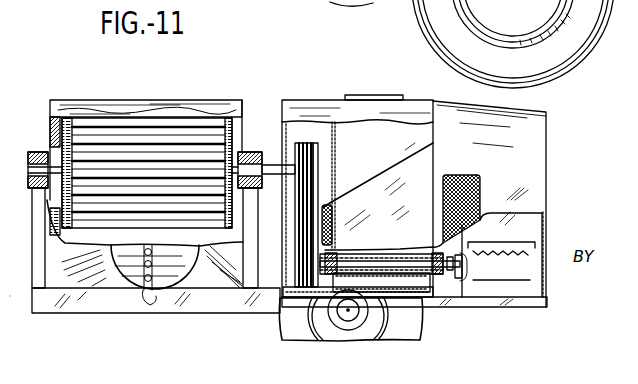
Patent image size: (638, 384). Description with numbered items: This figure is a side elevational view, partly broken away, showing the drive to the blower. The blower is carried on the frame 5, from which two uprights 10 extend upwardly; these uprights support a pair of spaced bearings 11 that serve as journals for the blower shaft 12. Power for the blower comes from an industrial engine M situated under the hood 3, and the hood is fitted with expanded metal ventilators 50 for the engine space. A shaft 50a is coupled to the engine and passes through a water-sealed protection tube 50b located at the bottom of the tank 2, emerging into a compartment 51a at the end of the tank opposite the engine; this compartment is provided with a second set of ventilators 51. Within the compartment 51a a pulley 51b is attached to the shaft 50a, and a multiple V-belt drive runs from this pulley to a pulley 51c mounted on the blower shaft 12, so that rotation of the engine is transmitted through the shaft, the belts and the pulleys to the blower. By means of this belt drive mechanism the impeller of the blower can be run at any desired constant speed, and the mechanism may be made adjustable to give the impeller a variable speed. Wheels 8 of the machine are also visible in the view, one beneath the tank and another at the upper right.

The tank 2 is at (416, 100).
The hood 3 is at (537, 143).
The frame 5 is at (206, 305).
The wheel 8 is at (420, 320).
The upright 10 is at (257, 262).
The bearing 11 is at (38, 152).
The blower shaft 12 is at (268, 165).
The expanded metal ventilator 50 is at (536, 231).
The shaft 50a is at (416, 258).
The water-sealed protection tube 50b is at (368, 258).
The second set of ventilators 51 is at (333, 208).
The compartment 51a is at (320, 136).
The pulley 51b is at (278, 292).
The pulley 51c is at (308, 142).
The industrial engine M is at (548, 218).